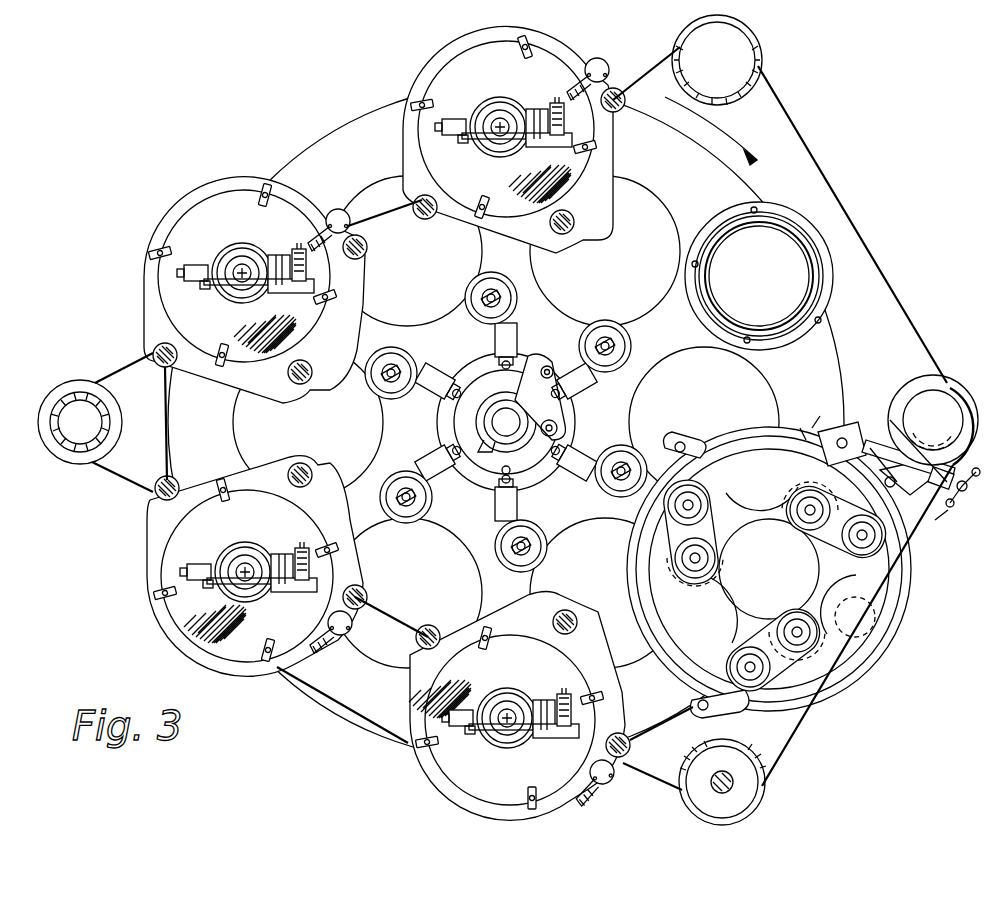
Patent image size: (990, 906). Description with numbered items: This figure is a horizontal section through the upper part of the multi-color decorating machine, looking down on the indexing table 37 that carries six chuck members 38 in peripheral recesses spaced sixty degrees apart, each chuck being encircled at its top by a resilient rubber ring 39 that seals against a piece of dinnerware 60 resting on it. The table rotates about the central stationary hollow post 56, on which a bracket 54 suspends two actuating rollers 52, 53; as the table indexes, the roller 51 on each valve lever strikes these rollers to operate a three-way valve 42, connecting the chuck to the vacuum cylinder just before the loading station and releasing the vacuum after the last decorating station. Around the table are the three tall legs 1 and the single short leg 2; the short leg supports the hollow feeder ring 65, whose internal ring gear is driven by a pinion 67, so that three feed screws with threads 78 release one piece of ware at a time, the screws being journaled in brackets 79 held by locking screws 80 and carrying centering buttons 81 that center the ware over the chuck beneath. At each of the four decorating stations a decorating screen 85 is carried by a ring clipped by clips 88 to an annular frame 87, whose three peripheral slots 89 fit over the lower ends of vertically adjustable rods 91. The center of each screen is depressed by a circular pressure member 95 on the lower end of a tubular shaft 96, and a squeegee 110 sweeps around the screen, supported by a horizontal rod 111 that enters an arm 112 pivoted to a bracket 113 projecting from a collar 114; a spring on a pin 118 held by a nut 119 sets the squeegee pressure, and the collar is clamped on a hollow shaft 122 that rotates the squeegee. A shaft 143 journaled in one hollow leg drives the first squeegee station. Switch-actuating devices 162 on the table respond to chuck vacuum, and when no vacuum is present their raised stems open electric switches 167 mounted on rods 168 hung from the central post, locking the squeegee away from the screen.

The tall legs 1 is at (762, 50).
The short leg 2 is at (940, 396).
The table 37 is at (314, 142).
The chuck member 38 is at (776, 208).
The resilient ring 39 is at (820, 250).
The three-way valve 42 is at (440, 378).
The roller 51 is at (508, 465).
The actuating roller 52 is at (560, 430).
The actuating roller 53 is at (540, 370).
The bracket 54 is at (548, 398).
The hollow post 56 is at (491, 422).
The dinnerware 60 is at (812, 575).
The hollow ring 65 is at (895, 588).
The pinion 67 is at (878, 608).
The threads 78 is at (697, 606).
The brackets 79 is at (714, 532).
The locking screws 80 is at (708, 505).
The centering button 81 is at (778, 506).
The decorating screen 85 is at (446, 80).
The annular frame 87 is at (452, 54).
The clips 88 is at (270, 662).
The peripheral slots 89 is at (170, 478).
The rods 91 is at (158, 500).
The pressure member 95 is at (250, 563).
The tubular shaft 96 is at (251, 563).
The squeegee 110 is at (210, 568).
The horizontal rod 111 is at (235, 600).
The arm 112 is at (292, 594).
The bracket 113 is at (290, 555).
The collar 114 is at (518, 700).
The pin 118 is at (572, 706).
The nut 119 is at (556, 742).
The hollow shaft 122 is at (493, 748).
The shaft 143 is at (692, 792).
The switch-actuating device 162 is at (383, 345).
The electric switch 167 is at (412, 497).
The rods 168 is at (382, 392).